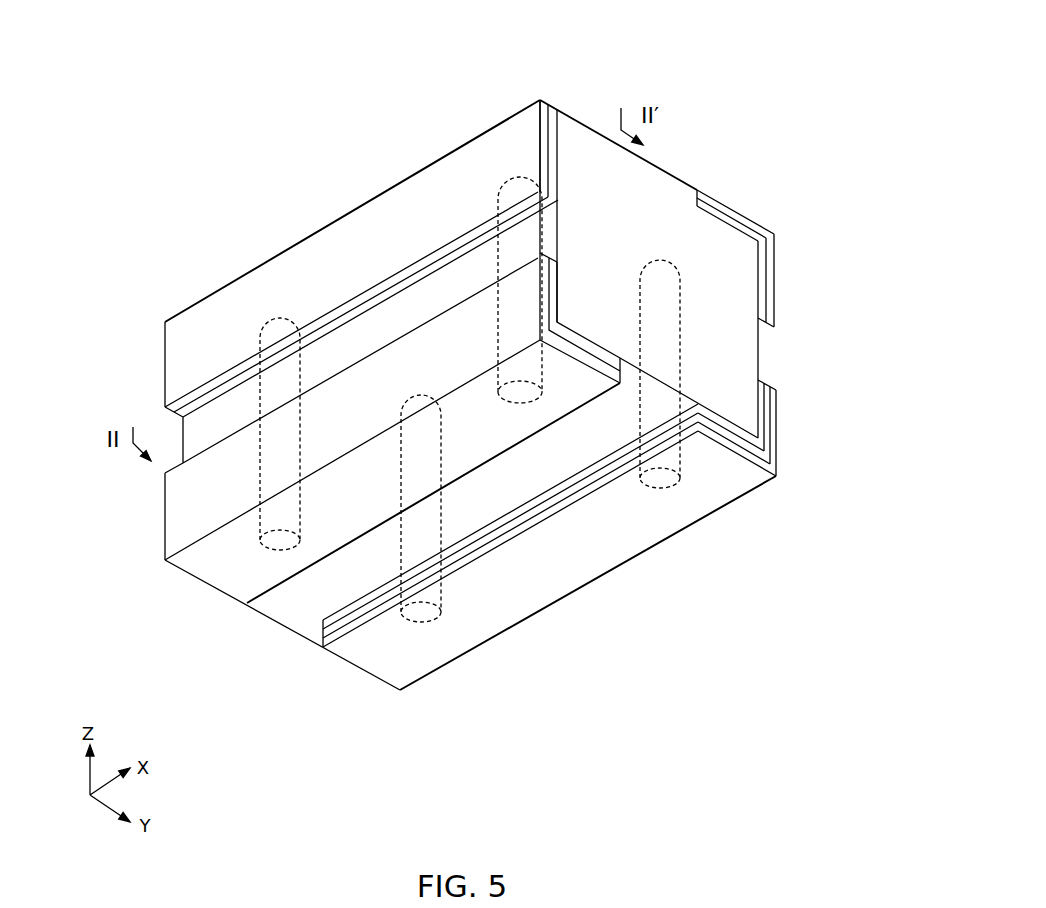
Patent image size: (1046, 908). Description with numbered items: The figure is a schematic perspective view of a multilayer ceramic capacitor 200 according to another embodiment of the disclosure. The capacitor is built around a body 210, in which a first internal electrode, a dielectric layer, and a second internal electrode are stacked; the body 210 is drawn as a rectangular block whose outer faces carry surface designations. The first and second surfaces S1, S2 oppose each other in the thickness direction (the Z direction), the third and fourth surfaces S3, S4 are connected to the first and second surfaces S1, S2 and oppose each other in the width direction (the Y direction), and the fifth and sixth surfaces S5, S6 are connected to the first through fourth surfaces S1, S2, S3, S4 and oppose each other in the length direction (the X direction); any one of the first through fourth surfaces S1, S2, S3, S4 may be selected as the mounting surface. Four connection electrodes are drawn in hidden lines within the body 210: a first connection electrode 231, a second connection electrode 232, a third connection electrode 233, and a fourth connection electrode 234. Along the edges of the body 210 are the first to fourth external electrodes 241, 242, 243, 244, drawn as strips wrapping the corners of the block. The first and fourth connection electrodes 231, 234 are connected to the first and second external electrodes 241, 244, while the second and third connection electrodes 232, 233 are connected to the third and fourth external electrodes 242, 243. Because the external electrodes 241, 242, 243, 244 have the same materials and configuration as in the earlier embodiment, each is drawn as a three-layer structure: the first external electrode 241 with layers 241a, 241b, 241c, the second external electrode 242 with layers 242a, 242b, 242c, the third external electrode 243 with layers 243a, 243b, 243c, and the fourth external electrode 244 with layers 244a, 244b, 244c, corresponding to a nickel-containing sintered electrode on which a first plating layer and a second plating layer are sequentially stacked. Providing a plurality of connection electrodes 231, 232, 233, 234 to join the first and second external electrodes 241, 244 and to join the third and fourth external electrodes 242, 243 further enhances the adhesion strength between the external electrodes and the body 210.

The multilayer ceramic capacitor 200 is at (232, 157).
The body 210 is at (312, 617).
The first connection electrode 231 is at (277, 545).
The second connection electrode 232 is at (423, 620).
The third connection electrode 233 is at (658, 482).
The fourth connection electrode 234 is at (522, 396).
The first external electrode 241 is at (557, 464).
The first layer of first frame member 241a is at (623, 362).
The second layer of first frame member 241b is at (622, 372).
The third layer of first frame member 241c is at (621, 383).
The third external electrode 242 is at (805, 442).
The first layer of second frame member 242a is at (768, 408).
The second layer of second frame member 242b is at (773, 440).
The third layer of second frame member 242c is at (866, 420).
The fourth external electrode 243 is at (805, 258).
The first layer of third frame member 243a is at (866, 205).
The second layer of third frame member 243b is at (768, 240).
The third layer of third frame member 243c is at (775, 234).
The second external electrode 244 is at (361, 212).
The first layer of fourth frame member 244a is at (557, 130).
The second layer of fourth frame member 244b is at (549, 115).
The third layer of fourth frame member 244c is at (541, 102).
The first surface S1 is at (313, 305).
The second surface S2 is at (374, 568).
The third surface S3 is at (250, 335).
The fourth surface S4 is at (711, 465).
The fifth surface S5 is at (294, 587).
The sixth surface S6 is at (640, 225).